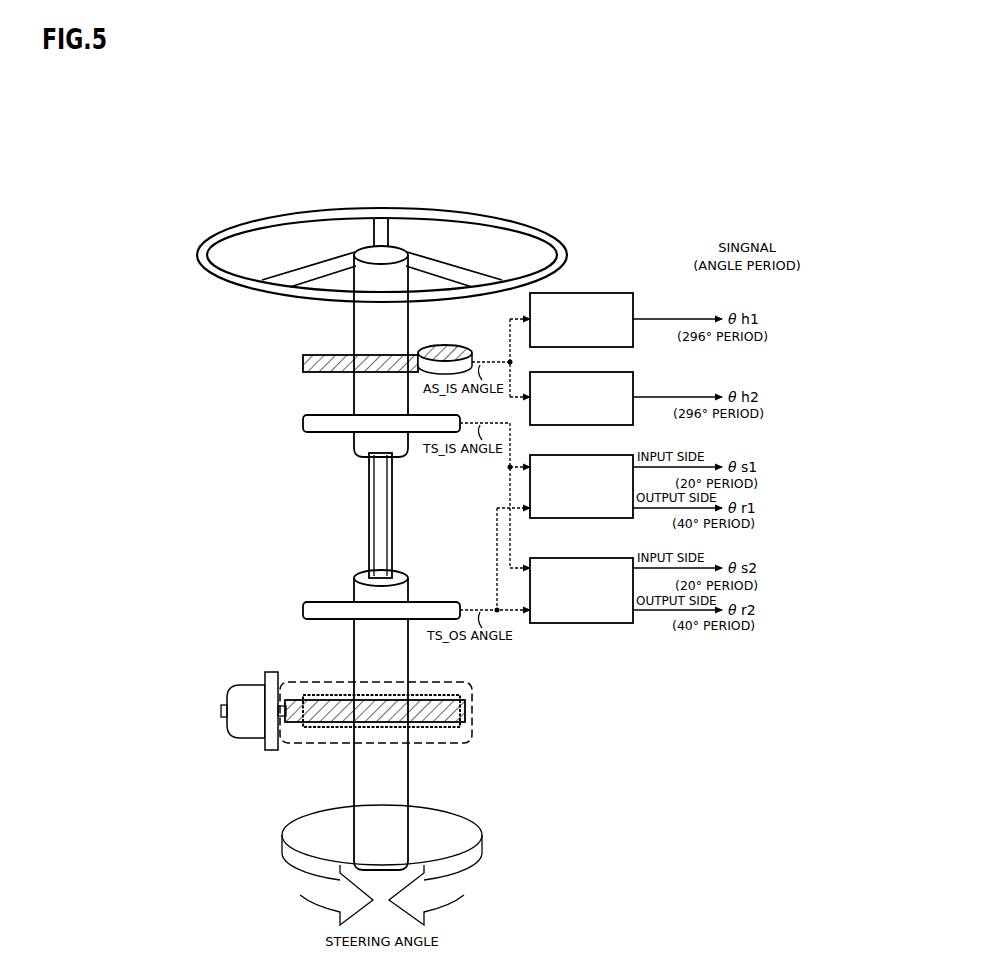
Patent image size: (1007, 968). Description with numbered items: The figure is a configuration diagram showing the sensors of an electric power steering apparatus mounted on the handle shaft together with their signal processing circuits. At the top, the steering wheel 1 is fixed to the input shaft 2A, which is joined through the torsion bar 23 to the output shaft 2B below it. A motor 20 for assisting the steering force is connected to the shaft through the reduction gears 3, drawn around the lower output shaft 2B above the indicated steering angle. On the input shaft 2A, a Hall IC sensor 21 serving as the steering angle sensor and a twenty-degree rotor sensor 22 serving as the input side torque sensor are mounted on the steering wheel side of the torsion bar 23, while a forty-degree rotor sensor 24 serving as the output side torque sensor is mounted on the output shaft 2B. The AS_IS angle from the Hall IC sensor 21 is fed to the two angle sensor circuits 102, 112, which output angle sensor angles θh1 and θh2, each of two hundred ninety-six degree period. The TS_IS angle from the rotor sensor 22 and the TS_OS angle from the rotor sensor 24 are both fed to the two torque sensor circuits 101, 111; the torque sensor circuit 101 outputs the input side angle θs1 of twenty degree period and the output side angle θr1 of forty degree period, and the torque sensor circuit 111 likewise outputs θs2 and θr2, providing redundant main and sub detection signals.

The steering wheel 1 is at (319, 243).
The input shaft 2A is at (408, 318).
The output shaft 2B is at (408, 772).
The reduction gears 3 is at (263, 739).
The motor 20 is at (167, 698).
The Hall IC sensor 21 is at (264, 344).
The 20° rotor sensor 22 is at (258, 404).
The torsion bar 23 is at (227, 515).
The 40° rotor sensor 24 is at (258, 590).
The torque sensor circuit 101 is at (618, 455).
The angle sensor circuit 102 is at (618, 293).
The torque sensor circuit 111 is at (618, 558).
The angle sensor circuit 112 is at (624, 372).